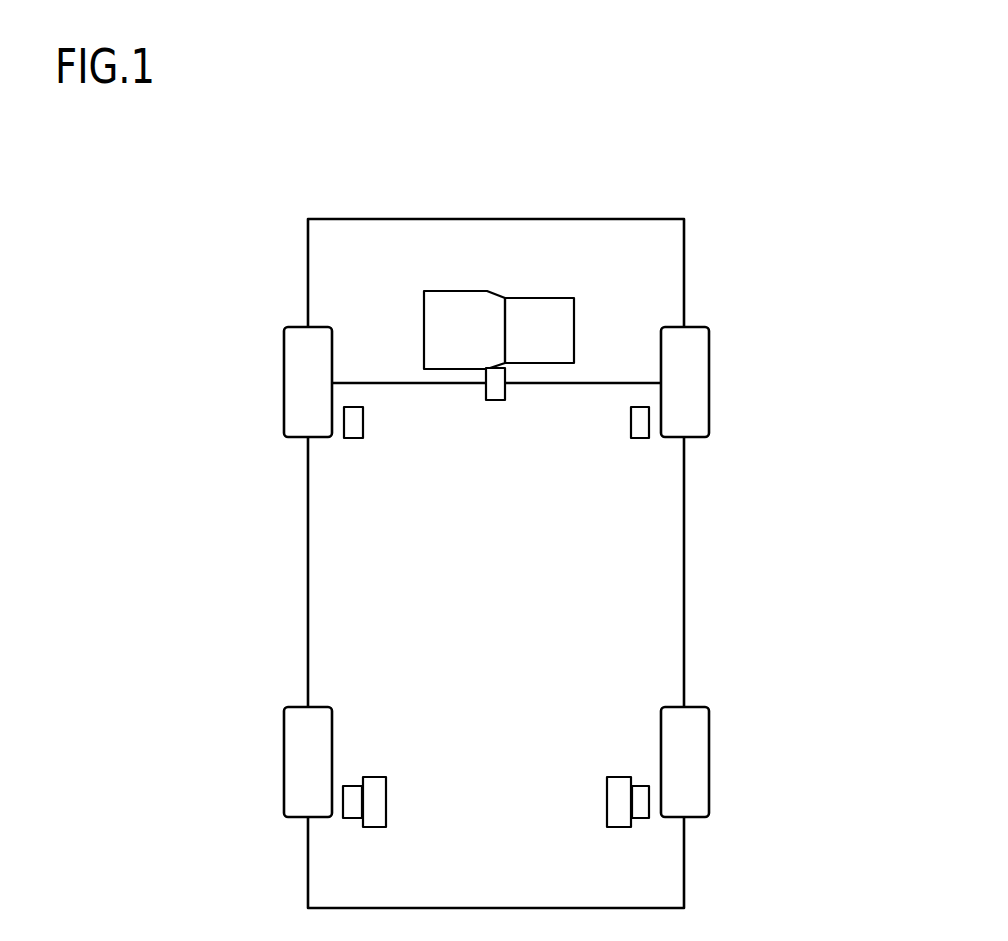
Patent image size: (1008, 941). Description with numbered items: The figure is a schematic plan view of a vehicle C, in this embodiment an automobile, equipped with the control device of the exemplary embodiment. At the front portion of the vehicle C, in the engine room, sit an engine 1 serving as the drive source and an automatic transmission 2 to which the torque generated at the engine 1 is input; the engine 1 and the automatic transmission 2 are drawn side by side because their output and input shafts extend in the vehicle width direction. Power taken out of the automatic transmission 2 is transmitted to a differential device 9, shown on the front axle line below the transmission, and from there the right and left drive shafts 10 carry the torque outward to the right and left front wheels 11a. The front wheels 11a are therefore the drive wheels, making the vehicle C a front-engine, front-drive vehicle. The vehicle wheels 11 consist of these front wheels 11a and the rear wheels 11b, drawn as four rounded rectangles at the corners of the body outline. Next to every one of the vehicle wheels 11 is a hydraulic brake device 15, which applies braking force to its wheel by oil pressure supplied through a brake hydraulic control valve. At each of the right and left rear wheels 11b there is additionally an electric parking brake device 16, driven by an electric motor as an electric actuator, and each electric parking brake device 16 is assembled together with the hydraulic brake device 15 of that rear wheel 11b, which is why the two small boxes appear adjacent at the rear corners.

The vehicle C is at (682, 162).
The engine 1 is at (543, 297).
The automatic transmission 2 is at (458, 292).
The differential device 9 is at (497, 402).
The drive shafts 10 is at (428, 385).
The vehicle wheels 11 is at (496, 572).
The front wheels 11a is at (284, 381).
The rear wheels 11b is at (284, 766).
The hydraulic brake device 15 is at (352, 440).
The electric parking brake device 16 is at (373, 828).